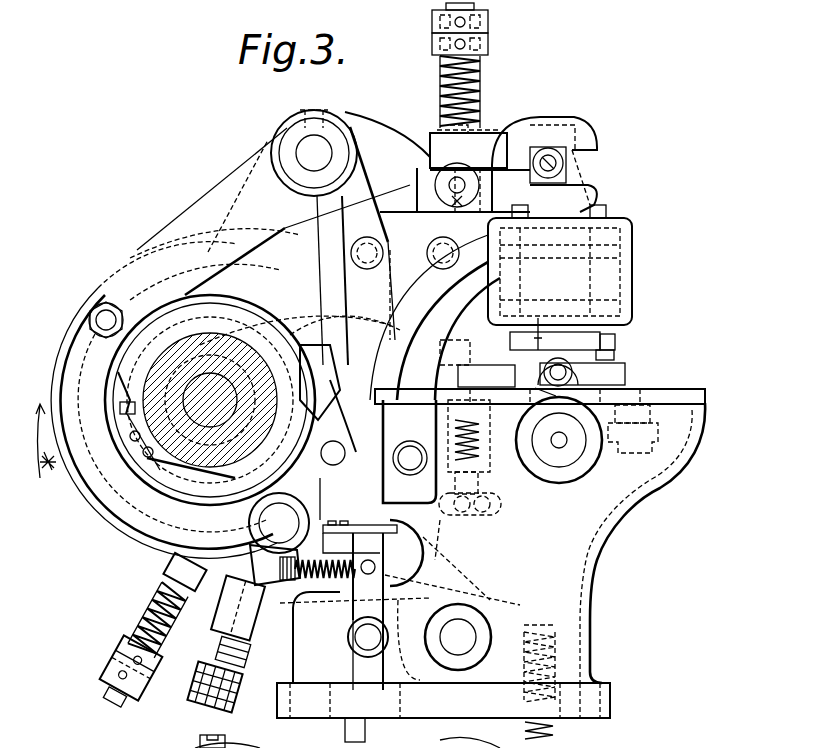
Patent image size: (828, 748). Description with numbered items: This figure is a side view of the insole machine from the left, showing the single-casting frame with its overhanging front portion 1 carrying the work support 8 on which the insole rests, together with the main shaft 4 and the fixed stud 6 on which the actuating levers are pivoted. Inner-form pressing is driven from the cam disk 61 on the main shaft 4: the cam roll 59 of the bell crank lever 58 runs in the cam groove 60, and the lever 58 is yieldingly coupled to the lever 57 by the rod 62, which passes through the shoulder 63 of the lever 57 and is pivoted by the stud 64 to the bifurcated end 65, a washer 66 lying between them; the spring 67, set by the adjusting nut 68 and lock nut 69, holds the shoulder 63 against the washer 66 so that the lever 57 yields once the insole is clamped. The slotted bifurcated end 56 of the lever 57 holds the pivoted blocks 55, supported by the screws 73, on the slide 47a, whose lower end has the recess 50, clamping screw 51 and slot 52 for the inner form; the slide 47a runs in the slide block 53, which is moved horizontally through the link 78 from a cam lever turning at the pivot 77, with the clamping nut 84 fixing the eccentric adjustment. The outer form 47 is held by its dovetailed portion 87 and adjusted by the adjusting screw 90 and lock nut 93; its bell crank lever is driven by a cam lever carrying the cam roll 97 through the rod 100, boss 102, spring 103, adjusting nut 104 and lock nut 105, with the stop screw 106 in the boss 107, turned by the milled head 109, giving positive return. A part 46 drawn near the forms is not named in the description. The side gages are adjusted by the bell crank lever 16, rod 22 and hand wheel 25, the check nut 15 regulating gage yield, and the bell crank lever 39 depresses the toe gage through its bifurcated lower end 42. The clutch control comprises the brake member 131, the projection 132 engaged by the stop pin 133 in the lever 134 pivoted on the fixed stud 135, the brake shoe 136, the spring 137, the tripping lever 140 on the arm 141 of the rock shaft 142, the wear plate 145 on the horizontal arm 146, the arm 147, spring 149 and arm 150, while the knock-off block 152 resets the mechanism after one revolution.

The overhanging front portion 1 is at (695, 440).
The main shaft 4 is at (212, 384).
The stud 6 is at (312, 150).
The work table or support 8 is at (702, 396).
The check nut 15 is at (372, 318).
The bell crank lever 16 is at (633, 434).
The rod 22 is at (559, 448).
The adjusting hand wheel 25 is at (572, 472).
The bell crank lever 39 is at (470, 530).
The bifurcated lower end 42 is at (476, 488).
The bearing block 46 is at (628, 378).
The outer form 47 is at (490, 376).
The vertically movable slide 47a is at (560, 338).
The groove or recess 50 is at (615, 358).
The clamping screw 51 is at (617, 338).
The slot 52 is at (543, 340).
The slide block 53 is at (626, 268).
The pivoted blocks 55 is at (578, 158).
The slotted bifurcated end 56 is at (600, 183).
The lever 57 is at (372, 128).
The bell crank lever 58 is at (395, 166).
The cam roll 59 is at (106, 302).
The cam groove 60 is at (72, 365).
The cam disk 61 is at (90, 496).
The rod 62 is at (452, 10).
The shoulder 63 is at (478, 133).
The stud 64 is at (462, 182).
The bifurcated end 65 is at (458, 204).
The washer 66 is at (440, 168).
The spring 67 is at (478, 86).
The adjusting nut 68 is at (484, 44).
The lock nut 69 is at (486, 25).
The screw 73 is at (552, 157).
The pivot 77 is at (455, 584).
The link 78 is at (407, 324).
The clamping nut 84 is at (441, 238).
The dovetailed portion 87 is at (335, 733).
The adjusting screw 90 is at (225, 742).
The lock nut 93 is at (234, 738).
The cam roll 97 is at (162, 500).
The rod 100 is at (108, 692).
The boss 102 is at (170, 568).
The spring 103 is at (150, 598).
The adjusting nut 104 is at (118, 655).
The lock nut 105 is at (110, 672).
The stop screw 106 is at (220, 652).
The boss 107 is at (238, 608).
The milled head 109 is at (212, 692).
The brake member 131 is at (128, 386).
The projection 132 is at (125, 412).
The stop pin 133 is at (322, 392).
The lever 134 is at (249, 524).
The fixed stud 135 is at (262, 552).
The brake shoe 136 is at (333, 428).
The spring 137 is at (348, 640).
The tripping lever 140 is at (395, 596).
The arm 141 is at (403, 660).
The rock shaft 142 is at (470, 622).
The wear plate 145 is at (426, 542).
The horizontal arm 146 is at (342, 580).
The arm 147 is at (305, 656).
The spring 149 is at (556, 730).
The arm 150 is at (520, 624).
The knock-off block 152 is at (142, 450).